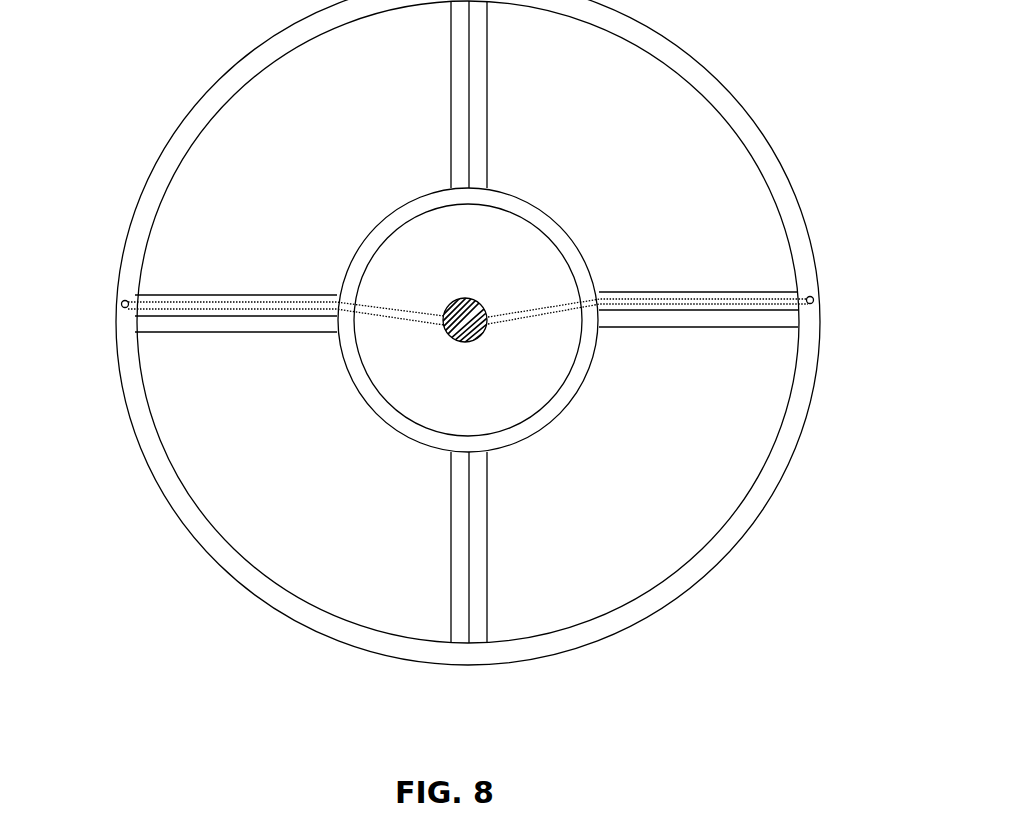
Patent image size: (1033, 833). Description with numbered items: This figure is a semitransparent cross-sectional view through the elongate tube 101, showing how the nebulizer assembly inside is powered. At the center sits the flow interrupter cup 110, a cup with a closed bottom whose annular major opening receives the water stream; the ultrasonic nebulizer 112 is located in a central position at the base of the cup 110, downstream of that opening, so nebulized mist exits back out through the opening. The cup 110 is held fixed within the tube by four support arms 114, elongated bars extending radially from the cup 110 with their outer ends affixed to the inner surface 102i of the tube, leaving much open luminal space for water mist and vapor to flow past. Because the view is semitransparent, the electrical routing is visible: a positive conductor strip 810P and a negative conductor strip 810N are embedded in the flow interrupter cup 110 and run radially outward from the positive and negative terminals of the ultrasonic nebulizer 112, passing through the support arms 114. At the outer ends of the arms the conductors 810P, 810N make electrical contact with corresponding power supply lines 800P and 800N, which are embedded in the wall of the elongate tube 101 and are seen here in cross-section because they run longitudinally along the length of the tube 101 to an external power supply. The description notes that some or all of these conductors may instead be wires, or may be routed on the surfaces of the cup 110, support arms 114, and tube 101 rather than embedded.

The elongate tube 101 is at (491, 332).
The inner surface of the tube 102i is at (750, 155).
The flow interrupter cup 110 is at (363, 405).
The ultrasonic nebulizer 112 is at (463, 314).
The support arms 114 is at (752, 327).
The negative power supply line 800N is at (122, 302).
The positive power supply line 800P is at (813, 298).
The negative conductor strip 810N is at (250, 305).
The positive conductor strip 810P is at (528, 305).